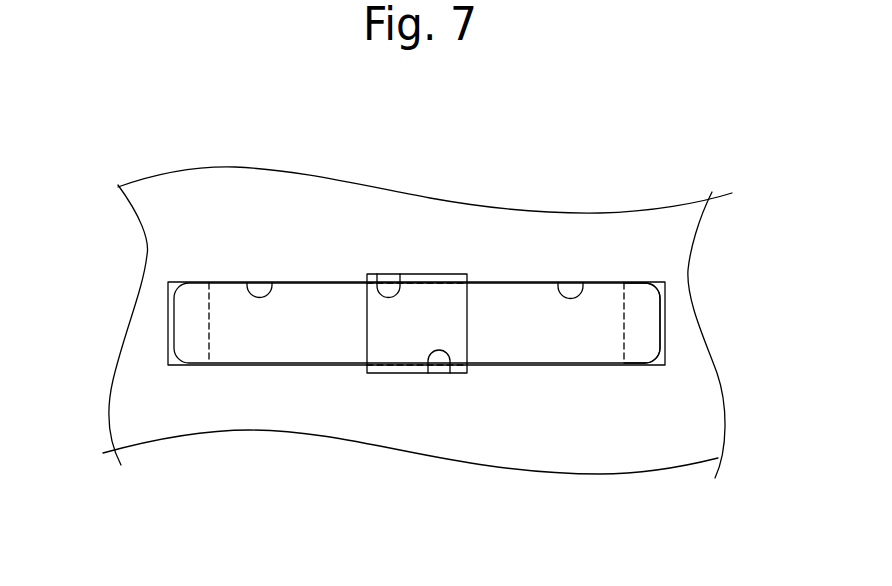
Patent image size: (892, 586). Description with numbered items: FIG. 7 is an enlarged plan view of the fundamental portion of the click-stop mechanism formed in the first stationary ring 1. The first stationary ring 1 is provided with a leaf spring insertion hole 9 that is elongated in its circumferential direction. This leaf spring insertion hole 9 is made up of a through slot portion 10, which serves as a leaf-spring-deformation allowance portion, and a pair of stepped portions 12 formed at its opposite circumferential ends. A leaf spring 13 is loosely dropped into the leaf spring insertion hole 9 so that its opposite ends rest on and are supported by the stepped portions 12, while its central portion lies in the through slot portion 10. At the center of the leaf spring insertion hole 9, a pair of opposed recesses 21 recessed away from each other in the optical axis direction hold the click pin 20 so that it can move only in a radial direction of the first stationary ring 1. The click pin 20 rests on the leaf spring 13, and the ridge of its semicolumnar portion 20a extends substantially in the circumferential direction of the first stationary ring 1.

The first stationary ring 1 is at (449, 230).
The leaf spring insertion hole 9 is at (583, 293).
The through slot portion 10 is at (247, 284).
The stepped portions 12 is at (167, 360).
The leaf spring 13 is at (650, 333).
The click pin 20 is at (367, 353).
The semicolumnar portion 20a is at (377, 316).
The opposed recesses 21 is at (378, 275).